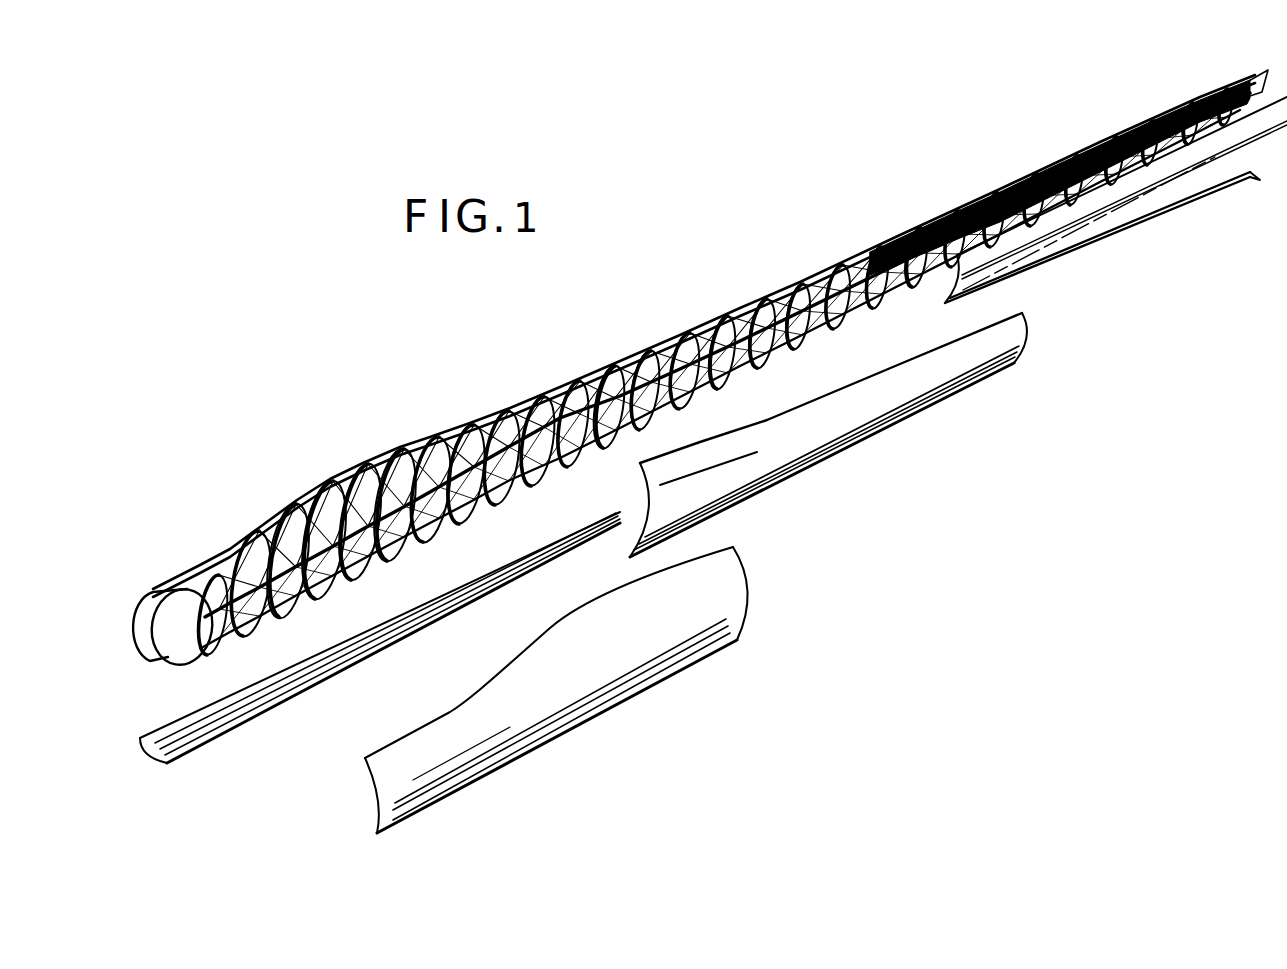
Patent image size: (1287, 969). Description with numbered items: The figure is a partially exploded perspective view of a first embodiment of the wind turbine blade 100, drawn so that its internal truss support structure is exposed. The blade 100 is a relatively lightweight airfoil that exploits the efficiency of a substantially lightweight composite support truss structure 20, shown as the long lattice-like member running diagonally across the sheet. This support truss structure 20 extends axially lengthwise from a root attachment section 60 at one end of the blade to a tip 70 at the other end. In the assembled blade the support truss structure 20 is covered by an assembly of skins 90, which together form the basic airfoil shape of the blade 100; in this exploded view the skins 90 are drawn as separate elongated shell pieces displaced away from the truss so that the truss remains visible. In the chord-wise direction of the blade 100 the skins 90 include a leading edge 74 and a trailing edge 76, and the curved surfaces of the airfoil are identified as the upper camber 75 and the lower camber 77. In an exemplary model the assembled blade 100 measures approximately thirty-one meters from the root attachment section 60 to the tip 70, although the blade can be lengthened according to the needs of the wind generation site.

The support truss structure 20 is at (793, 252).
The root attachment section 60 is at (158, 673).
The tip 70 is at (1205, 78).
The leading edge 74 is at (668, 328).
The upper camber 75 is at (498, 447).
The trailing edge 76 is at (703, 643).
The lower camber 77 is at (456, 713).
The skins 90 is at (918, 400).
The wind turbine blade 100 is at (315, 458).